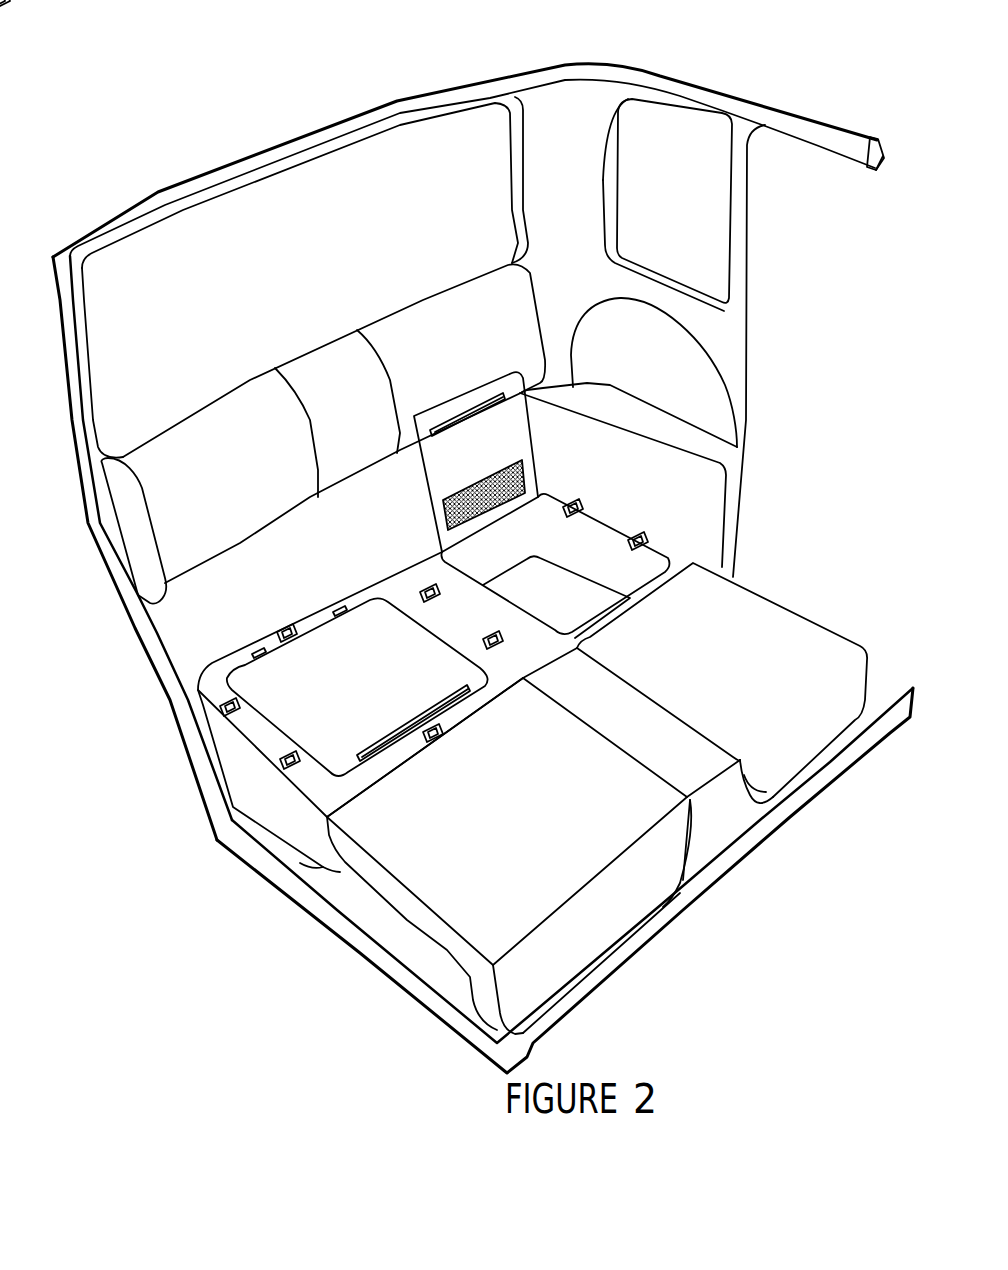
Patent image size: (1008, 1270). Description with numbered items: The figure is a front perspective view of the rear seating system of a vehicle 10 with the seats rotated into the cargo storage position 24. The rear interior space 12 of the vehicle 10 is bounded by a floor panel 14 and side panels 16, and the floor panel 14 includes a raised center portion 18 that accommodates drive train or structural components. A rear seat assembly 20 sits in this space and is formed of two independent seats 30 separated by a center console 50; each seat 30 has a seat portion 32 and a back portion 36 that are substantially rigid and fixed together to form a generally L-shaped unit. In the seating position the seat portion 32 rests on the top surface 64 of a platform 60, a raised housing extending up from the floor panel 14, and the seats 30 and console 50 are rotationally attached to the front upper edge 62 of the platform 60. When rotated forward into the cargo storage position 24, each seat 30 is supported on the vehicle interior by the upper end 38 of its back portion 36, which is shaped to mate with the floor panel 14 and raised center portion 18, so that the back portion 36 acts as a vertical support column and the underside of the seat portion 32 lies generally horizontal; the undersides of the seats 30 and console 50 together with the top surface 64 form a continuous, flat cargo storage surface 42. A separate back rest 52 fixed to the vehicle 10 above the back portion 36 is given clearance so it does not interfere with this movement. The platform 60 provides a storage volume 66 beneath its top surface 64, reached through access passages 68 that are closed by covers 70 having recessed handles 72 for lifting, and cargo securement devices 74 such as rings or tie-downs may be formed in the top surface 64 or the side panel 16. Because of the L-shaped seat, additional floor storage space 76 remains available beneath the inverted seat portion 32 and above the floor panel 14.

The vehicle 10 is at (783, 60).
The rear interior space 12 is at (813, 88).
The floor panel 14 is at (885, 678).
The side panel 16 is at (737, 330).
The raised center portion 18 is at (730, 833).
The rear seat assembly 20 is at (208, 853).
The cargo storage position 24 is at (252, 927).
The seat 30 is at (232, 888).
The seat portion 32 is at (407, 905).
The back portion 36 is at (488, 1017).
The upper end 38 is at (607, 957).
The cargo storage surface 42 is at (773, 625).
The center console 50 is at (727, 790).
The back rest 52 is at (173, 555).
The platform 60 is at (255, 795).
The front upper edge 62 is at (375, 783).
The top surface 64 is at (390, 577).
The storage volume 66 is at (563, 578).
The access passage 68 is at (263, 713).
The cover 70 is at (512, 435).
The recessed handle 72 is at (387, 727).
The cargo securement device 74 is at (438, 597).
The floor storage space 76 is at (437, 973).